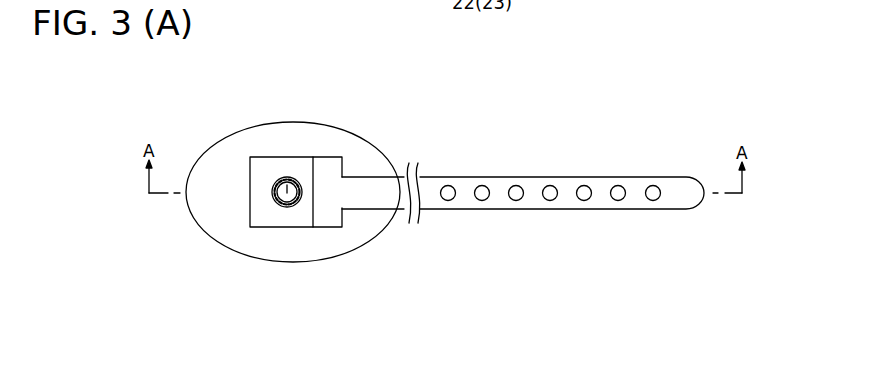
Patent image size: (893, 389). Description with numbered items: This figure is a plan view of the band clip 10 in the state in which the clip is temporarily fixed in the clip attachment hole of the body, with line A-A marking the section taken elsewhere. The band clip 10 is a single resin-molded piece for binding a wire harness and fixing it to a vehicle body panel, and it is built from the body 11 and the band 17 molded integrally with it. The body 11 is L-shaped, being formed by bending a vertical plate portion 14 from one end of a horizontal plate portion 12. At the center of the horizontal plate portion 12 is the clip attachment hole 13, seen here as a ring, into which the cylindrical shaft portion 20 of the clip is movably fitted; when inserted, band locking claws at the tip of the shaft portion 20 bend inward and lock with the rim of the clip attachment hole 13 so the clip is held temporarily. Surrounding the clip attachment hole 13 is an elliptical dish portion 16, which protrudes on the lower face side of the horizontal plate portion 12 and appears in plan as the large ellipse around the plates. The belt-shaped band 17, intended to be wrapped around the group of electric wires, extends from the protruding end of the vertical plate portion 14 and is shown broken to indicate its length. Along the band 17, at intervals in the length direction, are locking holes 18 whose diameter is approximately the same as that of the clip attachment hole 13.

The band clip 10 is at (185, 112).
The body 11 is at (296, 252).
The horizontal plate portion 12 is at (280, 221).
The clip attachment hole 13 is at (273, 197).
The vertical plate portion 14 is at (327, 219).
The elliptical dish portion 16 is at (242, 143).
The band 17 is at (502, 210).
The locking holes 18 is at (550, 185).
The shaft portion 20 is at (287, 188).